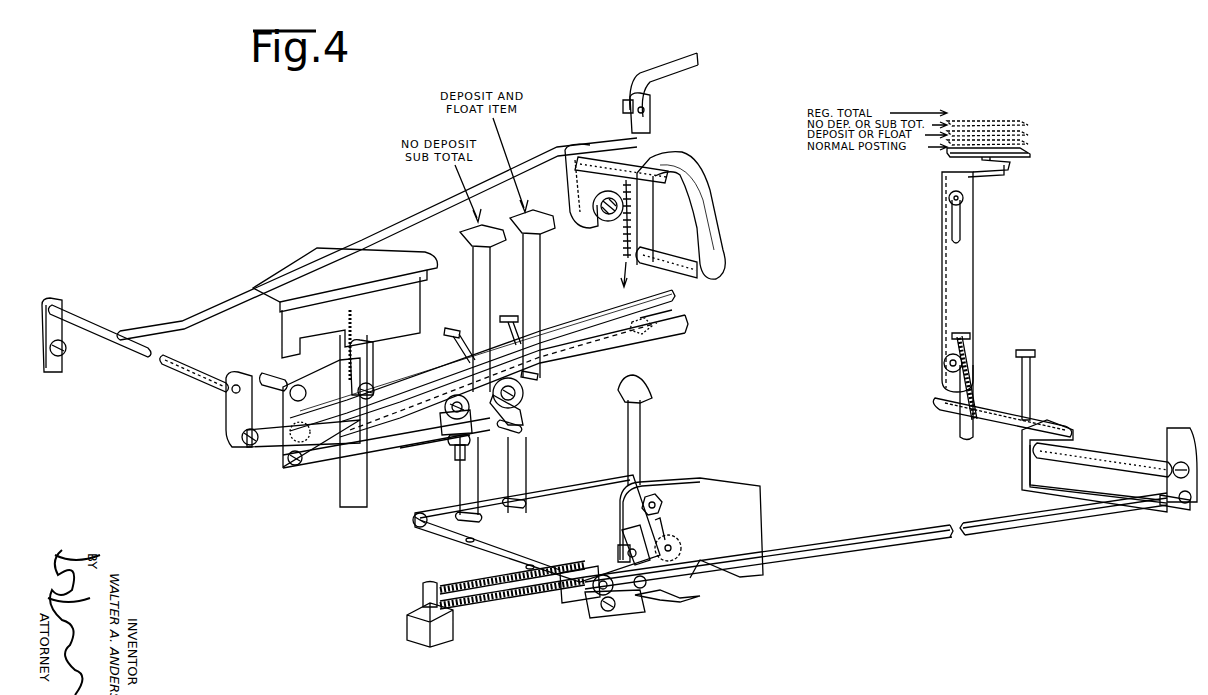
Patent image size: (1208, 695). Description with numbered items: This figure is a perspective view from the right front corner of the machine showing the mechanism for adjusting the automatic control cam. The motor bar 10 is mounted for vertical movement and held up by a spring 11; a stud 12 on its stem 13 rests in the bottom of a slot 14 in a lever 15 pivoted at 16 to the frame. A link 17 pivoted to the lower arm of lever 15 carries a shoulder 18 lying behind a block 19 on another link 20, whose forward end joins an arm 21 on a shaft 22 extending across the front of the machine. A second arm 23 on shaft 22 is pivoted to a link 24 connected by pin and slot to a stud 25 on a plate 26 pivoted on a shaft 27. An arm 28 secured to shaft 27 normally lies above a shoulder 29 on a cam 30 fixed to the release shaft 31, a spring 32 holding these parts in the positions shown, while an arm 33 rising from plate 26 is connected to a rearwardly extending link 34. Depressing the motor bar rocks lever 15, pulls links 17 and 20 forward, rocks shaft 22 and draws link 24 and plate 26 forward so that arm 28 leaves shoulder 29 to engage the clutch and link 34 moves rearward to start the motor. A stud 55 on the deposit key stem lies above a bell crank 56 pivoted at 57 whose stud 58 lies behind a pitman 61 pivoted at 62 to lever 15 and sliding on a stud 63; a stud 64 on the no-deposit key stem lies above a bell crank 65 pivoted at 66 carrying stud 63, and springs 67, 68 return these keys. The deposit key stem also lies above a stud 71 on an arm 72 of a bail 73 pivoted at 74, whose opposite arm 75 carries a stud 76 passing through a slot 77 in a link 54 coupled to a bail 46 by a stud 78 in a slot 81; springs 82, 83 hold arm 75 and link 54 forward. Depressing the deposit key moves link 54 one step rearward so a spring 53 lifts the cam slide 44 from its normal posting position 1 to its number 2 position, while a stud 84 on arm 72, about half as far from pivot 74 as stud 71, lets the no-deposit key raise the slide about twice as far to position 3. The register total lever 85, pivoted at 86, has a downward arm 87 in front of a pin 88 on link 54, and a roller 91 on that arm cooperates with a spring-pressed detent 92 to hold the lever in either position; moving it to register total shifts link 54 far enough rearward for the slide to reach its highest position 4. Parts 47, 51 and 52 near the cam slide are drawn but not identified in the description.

The normal position of cam slide 1 is at (1038, 159).
The number two position of cam slide 2 is at (1038, 146).
The number three position of cam slide 3 is at (1038, 136).
The number four position of cam slide 4 is at (1038, 126).
The motor bar 10 is at (414, 248).
The spring 11 is at (350, 326).
The stud 12 is at (375, 388).
The stem 13 is at (360, 472).
The slot 14 is at (372, 358).
The lever 15 is at (337, 396).
The pivot 16 is at (290, 395).
The link 17 is at (432, 383).
The shoulder 18 is at (655, 329).
The block 19 is at (640, 336).
The link 20 is at (582, 347).
The arm 21 is at (235, 420).
The shaft 22 is at (196, 374).
The arm 23 is at (45, 360).
The link 24 is at (172, 325).
The stud 25 is at (672, 273).
The plate 26 is at (668, 210).
The shaft 27 is at (608, 160).
The arm 28 is at (565, 188).
The shoulder 29 is at (588, 226).
The cam 30 is at (596, 222).
The release shaft 31 is at (612, 218).
The spring 32 is at (615, 258).
The arm 33 is at (652, 110).
The link 34 is at (675, 58).
The cam slide 44 is at (967, 302).
The bail 46 is at (1105, 493).
The rod 47 is at (1120, 450).
The lever 51 is at (940, 405).
The spring 52 is at (975, 378).
The spring 53 is at (1032, 381).
The link 54 is at (1030, 527).
The stud 55 is at (541, 377).
The bell crank 56 is at (522, 396).
The pivot 57 is at (525, 412).
The stud 58 is at (524, 428).
The pitman 61 is at (418, 444).
The pivot 62 is at (295, 466).
The stud 63 is at (458, 452).
The stud 64 is at (476, 440).
The bell crank 65 is at (438, 422).
The pivot 66 is at (445, 410).
The spring 67 is at (502, 318).
The spring 68 is at (448, 336).
The stud 71 is at (527, 502).
The arm 72 is at (488, 498).
The bail 73 is at (427, 553).
The pivot 74 is at (411, 523).
The arm 75 is at (597, 596).
The stud 76 is at (636, 612).
The slot 77 is at (565, 590).
The stud 78 is at (1192, 505).
The slot 81 is at (1162, 503).
The spring 82 is at (472, 580).
The spring 83 is at (462, 600).
The stud 84 is at (482, 518).
The register total lever 85 is at (644, 447).
The pivot 86 is at (660, 504).
The arm 87 is at (618, 552).
The pin 88 is at (645, 590).
The roller 91 is at (625, 535).
The detent 92 is at (680, 552).